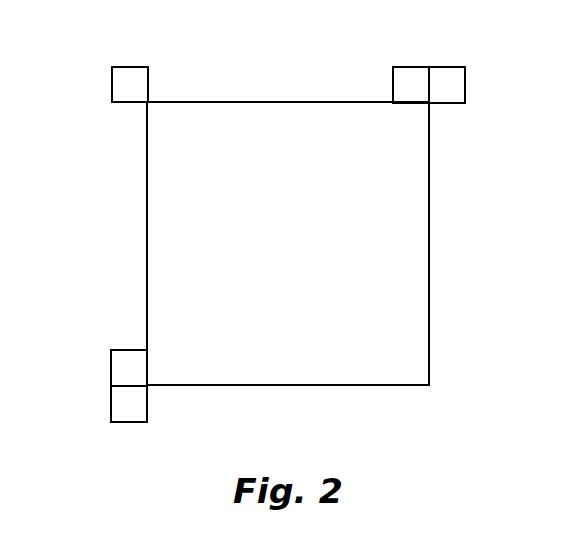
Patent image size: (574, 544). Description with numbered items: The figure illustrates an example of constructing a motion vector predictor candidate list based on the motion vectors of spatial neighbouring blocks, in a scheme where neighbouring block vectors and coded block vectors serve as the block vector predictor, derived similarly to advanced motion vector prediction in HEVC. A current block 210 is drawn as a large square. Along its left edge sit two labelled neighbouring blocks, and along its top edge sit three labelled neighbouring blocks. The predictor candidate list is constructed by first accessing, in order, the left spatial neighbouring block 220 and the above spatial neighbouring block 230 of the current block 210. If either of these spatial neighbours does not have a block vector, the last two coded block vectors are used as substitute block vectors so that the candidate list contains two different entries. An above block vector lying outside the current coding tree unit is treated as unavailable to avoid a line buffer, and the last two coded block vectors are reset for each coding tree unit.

The current block 210 is at (430, 244).
The spatial neighbouring block a1 220 is at (111, 365).
The spatial neighbouring block b1 230 is at (413, 67).